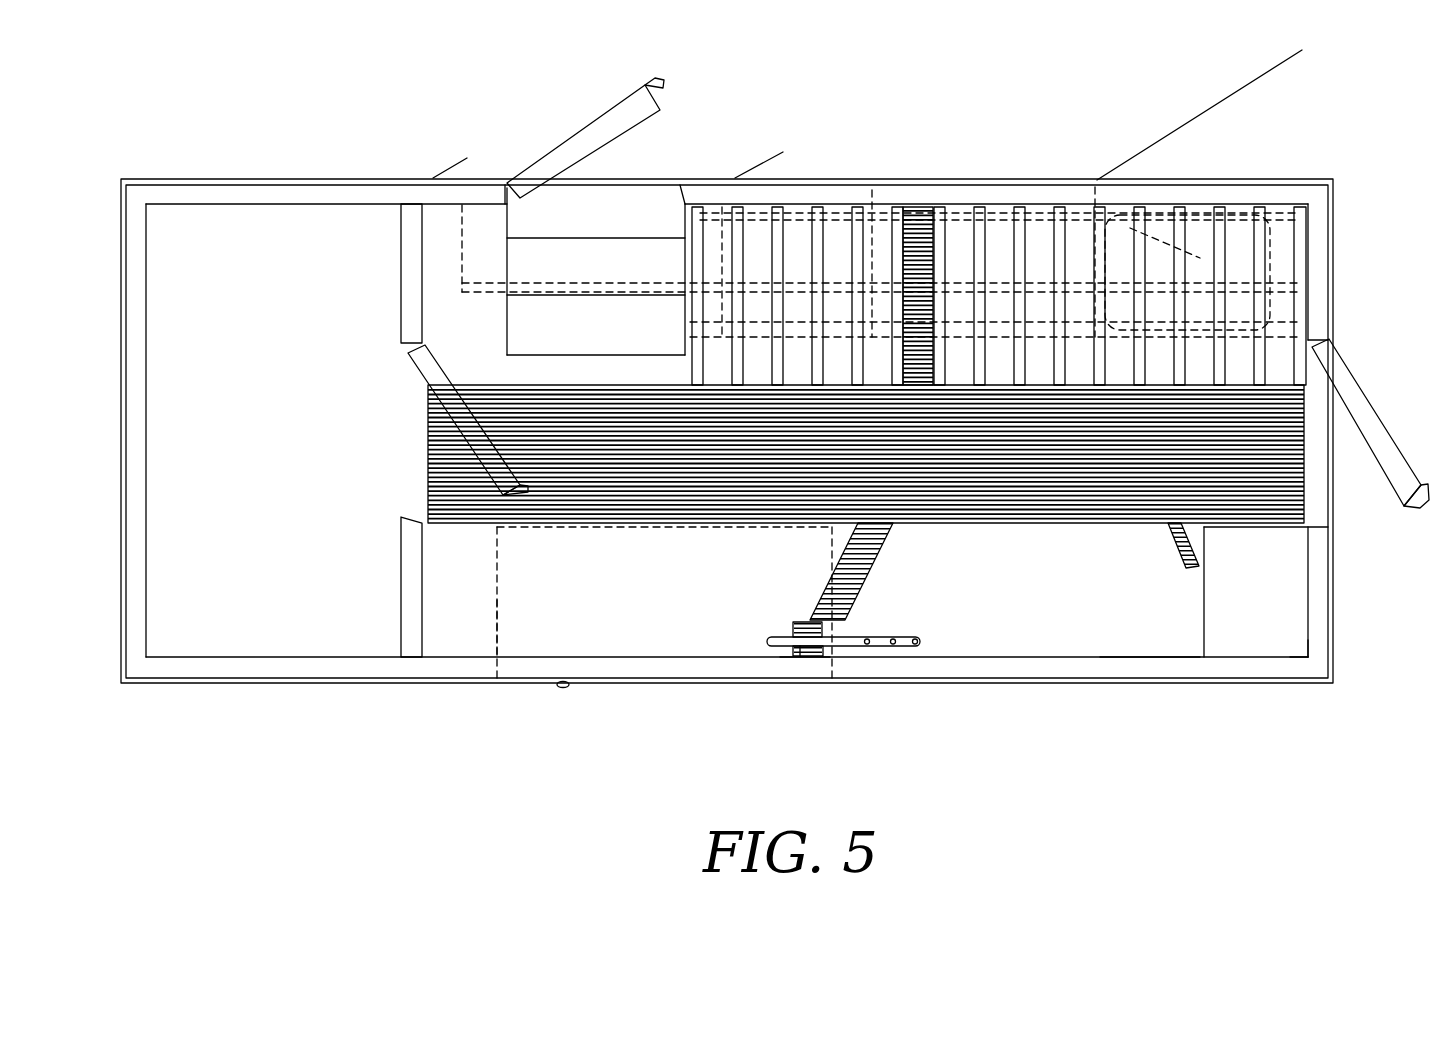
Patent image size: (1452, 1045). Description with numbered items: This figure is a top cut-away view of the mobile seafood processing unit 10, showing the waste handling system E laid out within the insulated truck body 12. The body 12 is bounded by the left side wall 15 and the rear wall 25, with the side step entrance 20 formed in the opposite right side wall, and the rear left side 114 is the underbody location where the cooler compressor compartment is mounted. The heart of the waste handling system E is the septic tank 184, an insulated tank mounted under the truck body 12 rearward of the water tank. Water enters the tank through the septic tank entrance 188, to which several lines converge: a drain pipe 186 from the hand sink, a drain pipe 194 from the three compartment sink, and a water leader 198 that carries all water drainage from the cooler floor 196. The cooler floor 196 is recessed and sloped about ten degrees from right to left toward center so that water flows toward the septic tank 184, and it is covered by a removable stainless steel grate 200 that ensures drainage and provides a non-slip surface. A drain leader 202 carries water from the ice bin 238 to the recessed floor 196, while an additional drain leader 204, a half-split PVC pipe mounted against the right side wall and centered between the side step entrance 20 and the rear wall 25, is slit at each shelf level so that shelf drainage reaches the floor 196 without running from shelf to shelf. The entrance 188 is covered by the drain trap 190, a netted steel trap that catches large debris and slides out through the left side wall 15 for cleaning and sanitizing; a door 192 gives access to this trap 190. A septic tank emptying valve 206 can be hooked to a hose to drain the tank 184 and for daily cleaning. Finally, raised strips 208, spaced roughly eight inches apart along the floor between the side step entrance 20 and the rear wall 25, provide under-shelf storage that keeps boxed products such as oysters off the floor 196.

The mobile seafood processing unit 10 is at (998, 127).
The insulated truck body 12 is at (447, 237).
The left side wall 15 is at (1150, 668).
The side step entrance 20 is at (638, 192).
The rear wall 25 is at (1320, 240).
The rear left side 114 is at (1320, 664).
The septic tank 184 is at (497, 600).
The drain pipe 186 is at (772, 646).
The septic tank entrance 188 is at (790, 628).
The drain trap 190 is at (800, 656).
The door 192 is at (797, 703).
The drain pipe 194 is at (885, 646).
The cooler floor 196 is at (565, 445).
The water leader 198 is at (853, 577).
The stainless steel grate 200 is at (1080, 480).
The drain leader 202 is at (1180, 565).
The drain leader 204 is at (920, 213).
The septic tank emptying valve 206 is at (563, 688).
The raised strips 208 is at (780, 252).
The ice bin 238 is at (1275, 614).
The waste handling system E is at (997, 713).